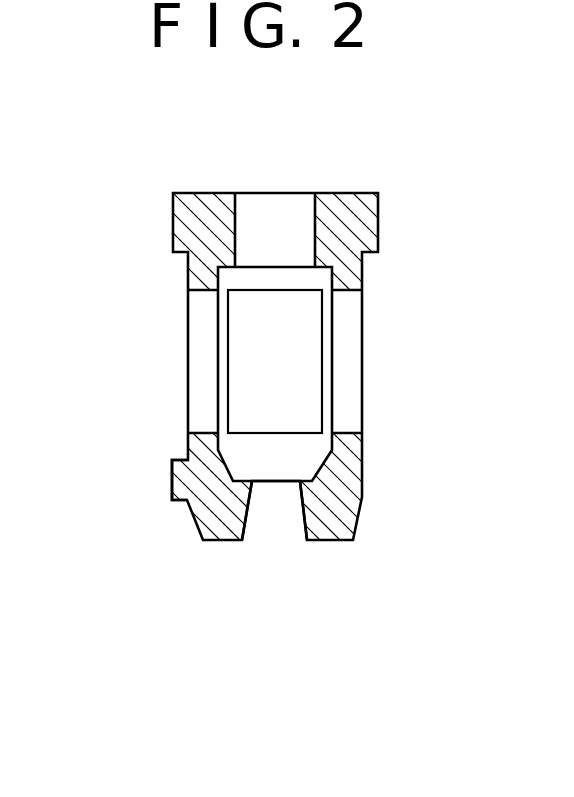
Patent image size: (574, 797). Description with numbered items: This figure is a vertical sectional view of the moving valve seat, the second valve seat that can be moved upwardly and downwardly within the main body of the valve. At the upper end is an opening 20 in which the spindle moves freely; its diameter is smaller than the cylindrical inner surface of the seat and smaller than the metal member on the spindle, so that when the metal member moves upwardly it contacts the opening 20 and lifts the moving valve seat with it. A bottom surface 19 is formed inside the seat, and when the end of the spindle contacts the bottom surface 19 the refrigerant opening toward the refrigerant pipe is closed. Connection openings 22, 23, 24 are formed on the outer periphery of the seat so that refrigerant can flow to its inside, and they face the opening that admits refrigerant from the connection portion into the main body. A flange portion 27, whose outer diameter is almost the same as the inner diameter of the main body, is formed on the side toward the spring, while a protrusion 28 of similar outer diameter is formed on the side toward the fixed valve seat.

The bottom surface 19 is at (310, 480).
The opening 20 is at (237, 212).
The connection opening 22 is at (238, 385).
The connection opening 23 is at (190, 345).
The connection opening 24 is at (347, 340).
The flange portion 27 is at (365, 192).
The protrusion 28 is at (172, 483).